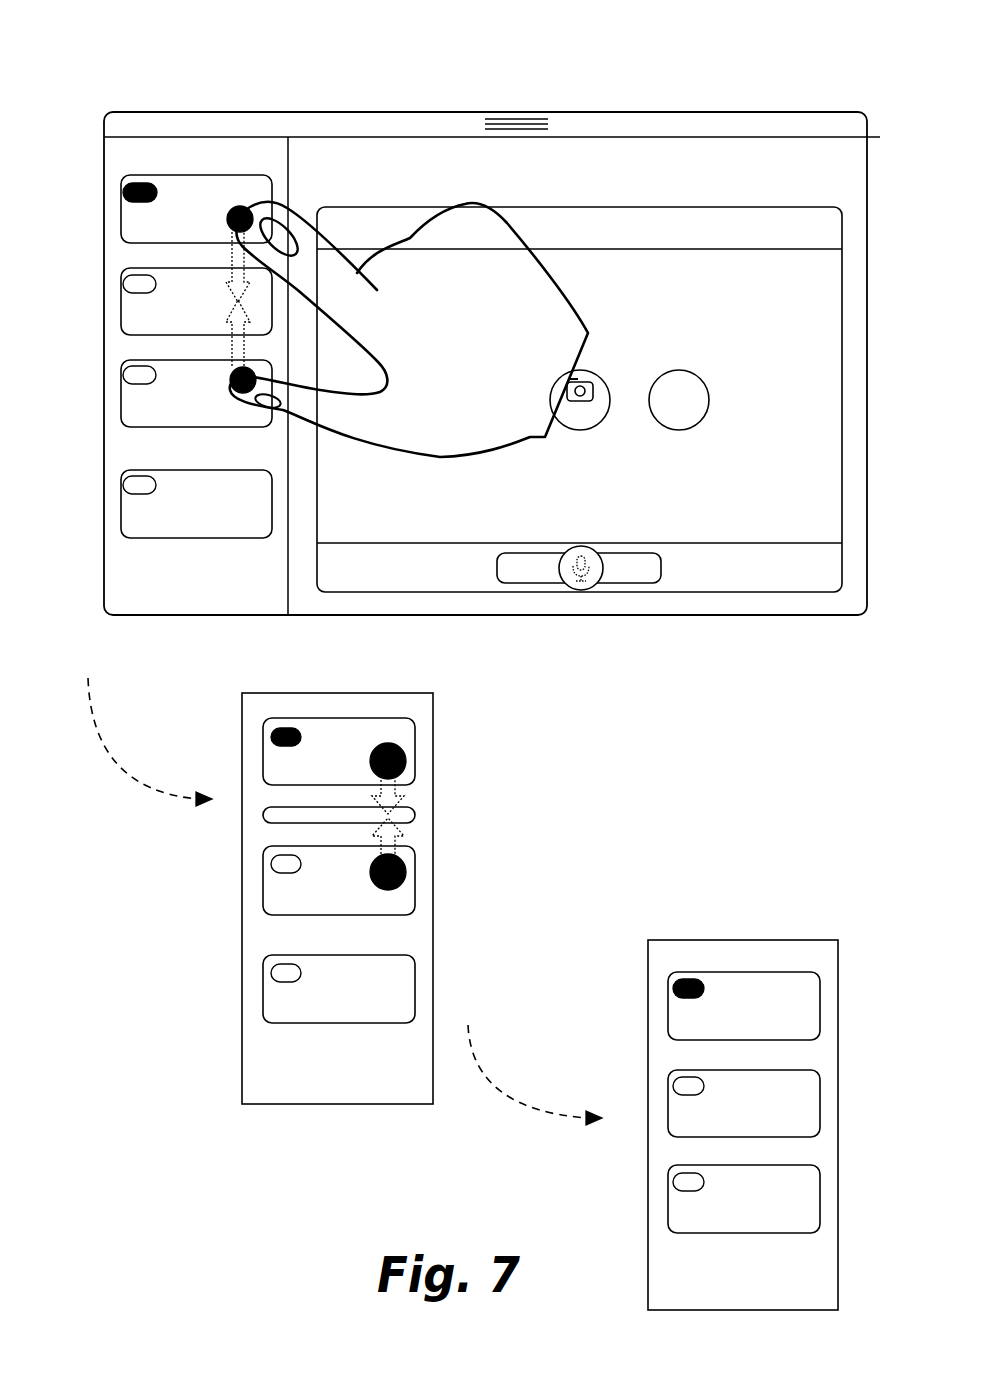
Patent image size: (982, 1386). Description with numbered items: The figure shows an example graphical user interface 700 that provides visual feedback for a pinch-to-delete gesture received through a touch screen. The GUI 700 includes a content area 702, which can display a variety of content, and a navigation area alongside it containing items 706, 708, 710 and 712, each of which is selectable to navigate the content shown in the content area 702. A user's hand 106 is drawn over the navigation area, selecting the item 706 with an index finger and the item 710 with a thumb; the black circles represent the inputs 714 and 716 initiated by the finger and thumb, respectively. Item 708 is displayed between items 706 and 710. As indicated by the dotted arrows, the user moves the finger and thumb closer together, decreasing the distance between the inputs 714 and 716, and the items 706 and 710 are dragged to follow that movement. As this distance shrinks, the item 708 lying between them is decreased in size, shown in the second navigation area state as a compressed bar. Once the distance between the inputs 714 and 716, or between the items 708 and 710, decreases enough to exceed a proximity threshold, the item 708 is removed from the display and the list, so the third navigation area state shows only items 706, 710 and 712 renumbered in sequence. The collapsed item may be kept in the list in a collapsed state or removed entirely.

The graphical user interface 700 is at (151, 73).
The content area 702 is at (597, 140).
The user's hand 106 is at (473, 341).
The item 706 is at (211, 222).
The item 708 is at (211, 316).
The item 710 is at (211, 407).
The item 712 is at (211, 517).
The input 714 is at (238, 208).
The input 716 is at (243, 392).